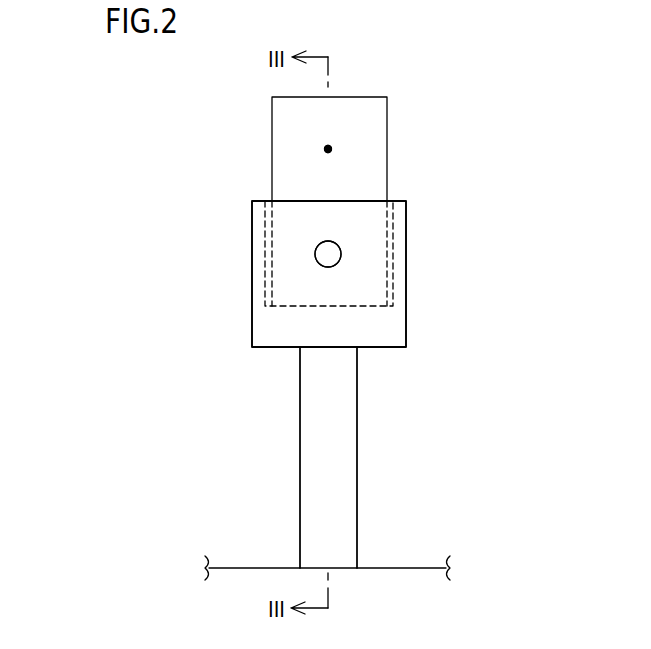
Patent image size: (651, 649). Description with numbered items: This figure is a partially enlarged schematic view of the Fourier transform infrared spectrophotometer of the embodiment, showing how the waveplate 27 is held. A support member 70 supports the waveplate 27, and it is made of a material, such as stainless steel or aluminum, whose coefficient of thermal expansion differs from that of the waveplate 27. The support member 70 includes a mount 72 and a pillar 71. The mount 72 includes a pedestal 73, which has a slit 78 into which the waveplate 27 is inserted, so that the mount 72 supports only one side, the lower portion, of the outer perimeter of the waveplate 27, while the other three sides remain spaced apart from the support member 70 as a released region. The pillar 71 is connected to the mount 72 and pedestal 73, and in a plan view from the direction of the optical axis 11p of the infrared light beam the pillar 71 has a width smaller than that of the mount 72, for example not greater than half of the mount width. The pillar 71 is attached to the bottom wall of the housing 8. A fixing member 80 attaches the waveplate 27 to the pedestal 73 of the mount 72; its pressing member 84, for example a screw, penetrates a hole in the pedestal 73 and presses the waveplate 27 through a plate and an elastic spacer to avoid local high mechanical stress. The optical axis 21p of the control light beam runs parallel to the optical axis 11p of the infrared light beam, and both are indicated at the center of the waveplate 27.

The housing 8 is at (398, 568).
The optical axis of infrared light beam 11p is at (331, 147).
The optical axis of control light beam 21p is at (419, 134).
The waveplate 27 is at (387, 170).
The support member 70 is at (468, 310).
The pillar 71 is at (357, 380).
The mount 72 is at (406, 320).
The pedestal 73 is at (358, 279).
The slit 78 is at (393, 288).
The fixing member 80 is at (340, 247).
The pressing member 84 is at (405, 242).